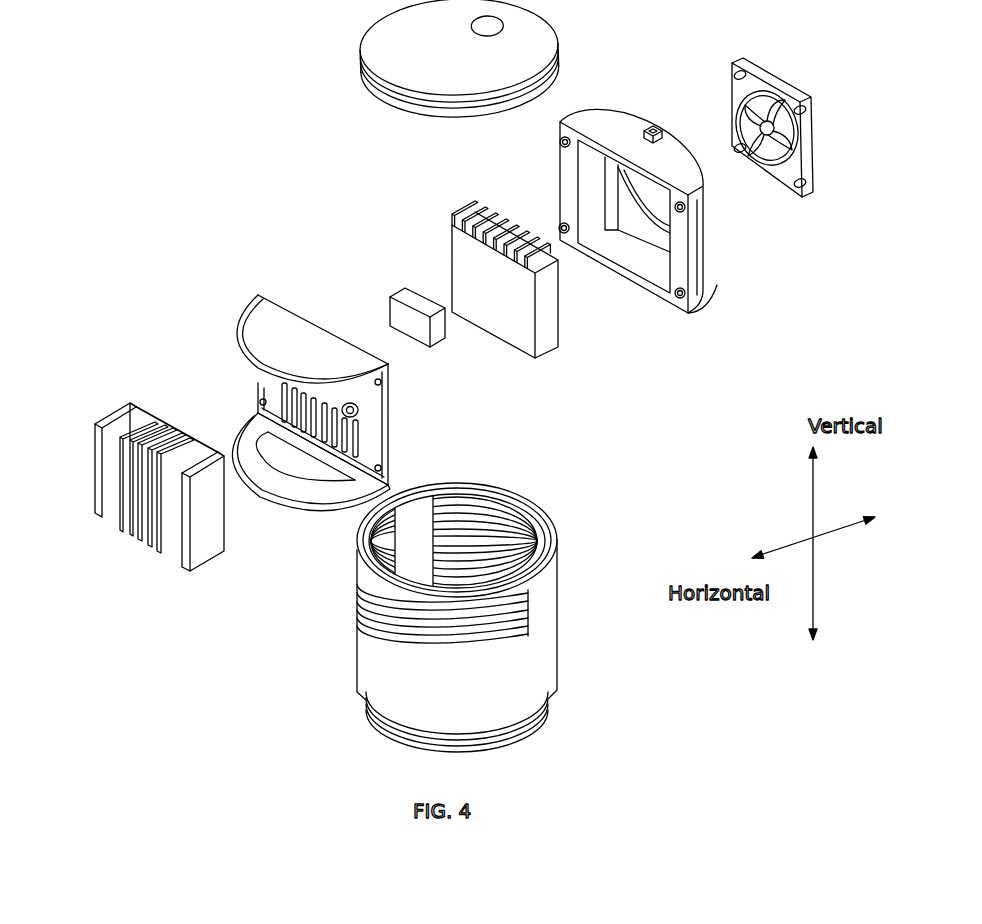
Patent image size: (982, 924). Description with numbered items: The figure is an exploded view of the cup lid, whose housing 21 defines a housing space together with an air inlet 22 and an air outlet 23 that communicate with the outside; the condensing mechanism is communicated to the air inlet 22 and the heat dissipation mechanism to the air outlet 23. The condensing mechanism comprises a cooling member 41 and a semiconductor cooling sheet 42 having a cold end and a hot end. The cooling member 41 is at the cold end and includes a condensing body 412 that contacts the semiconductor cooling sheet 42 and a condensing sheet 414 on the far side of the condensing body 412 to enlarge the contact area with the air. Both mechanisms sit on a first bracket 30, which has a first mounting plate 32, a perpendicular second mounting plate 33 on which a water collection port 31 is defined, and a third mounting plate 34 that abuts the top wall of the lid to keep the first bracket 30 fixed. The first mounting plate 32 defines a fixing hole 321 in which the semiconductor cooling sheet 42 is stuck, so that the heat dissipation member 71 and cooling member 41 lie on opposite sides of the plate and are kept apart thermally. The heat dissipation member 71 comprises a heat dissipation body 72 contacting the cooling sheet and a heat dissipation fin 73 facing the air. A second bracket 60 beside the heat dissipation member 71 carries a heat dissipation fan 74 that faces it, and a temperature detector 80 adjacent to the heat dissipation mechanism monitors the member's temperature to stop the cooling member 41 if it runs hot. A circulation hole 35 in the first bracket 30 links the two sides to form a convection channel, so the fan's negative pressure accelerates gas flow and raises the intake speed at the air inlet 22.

The housing 21 is at (481, 609).
The air inlet 22 is at (412, 643).
The air outlet 23 is at (520, 523).
The first bracket 30 is at (154, 232).
The water collection port 31 is at (300, 460).
The first mounting plate 32 is at (268, 392).
The fixing hole 321 is at (334, 386).
The second mounting plate 33 is at (238, 432).
The third mounting plate 34 is at (271, 313).
The circulation hole 35 is at (362, 440).
The cooling member 41 is at (71, 322).
The condensing body 412 is at (158, 412).
The condensing sheet 414 is at (130, 404).
The semiconductor cooling sheet 42 is at (431, 343).
The second bracket 60 is at (703, 295).
The heat dissipation member 71 is at (339, 152).
The heat dissipation body 72 is at (462, 262).
The heat dissipation fin 73 is at (470, 212).
The heat dissipation fan 74 is at (812, 192).
The temperature detector 80 is at (647, 128).